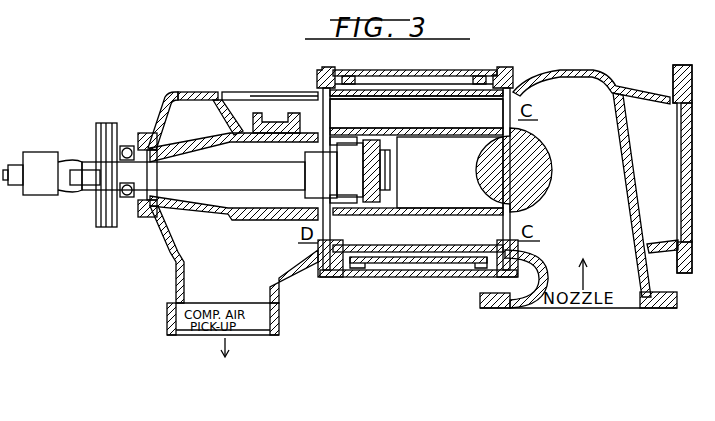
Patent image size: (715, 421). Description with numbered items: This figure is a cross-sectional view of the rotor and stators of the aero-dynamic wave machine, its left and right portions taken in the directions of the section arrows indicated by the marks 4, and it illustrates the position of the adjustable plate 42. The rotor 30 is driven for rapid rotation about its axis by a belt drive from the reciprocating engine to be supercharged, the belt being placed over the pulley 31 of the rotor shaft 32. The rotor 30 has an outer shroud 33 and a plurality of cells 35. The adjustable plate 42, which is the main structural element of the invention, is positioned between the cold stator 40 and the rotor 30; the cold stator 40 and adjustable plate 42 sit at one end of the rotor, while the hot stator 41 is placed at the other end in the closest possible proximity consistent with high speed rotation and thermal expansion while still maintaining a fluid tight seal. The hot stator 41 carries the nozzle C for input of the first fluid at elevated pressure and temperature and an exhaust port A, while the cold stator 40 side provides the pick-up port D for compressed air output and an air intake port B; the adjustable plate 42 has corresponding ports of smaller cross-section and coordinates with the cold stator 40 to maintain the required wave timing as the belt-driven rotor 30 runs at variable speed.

The rotor 30 is at (378, 112).
The pulley 31 is at (106, 124).
The rotor shaft 32 is at (95, 173).
The outer shroud 33 is at (395, 98).
The cells 35 is at (480, 119).
The cold stator 40 is at (315, 72).
The hot stator 41 is at (513, 73).
The adjustable plate 42 is at (316, 107).
The section line 4- 4 is at (696, 72).